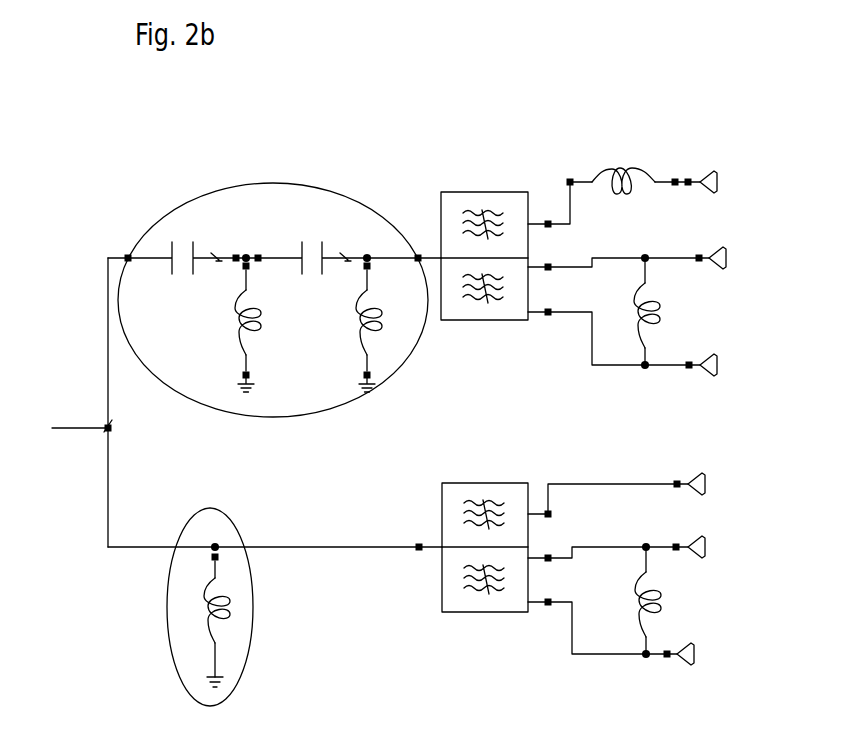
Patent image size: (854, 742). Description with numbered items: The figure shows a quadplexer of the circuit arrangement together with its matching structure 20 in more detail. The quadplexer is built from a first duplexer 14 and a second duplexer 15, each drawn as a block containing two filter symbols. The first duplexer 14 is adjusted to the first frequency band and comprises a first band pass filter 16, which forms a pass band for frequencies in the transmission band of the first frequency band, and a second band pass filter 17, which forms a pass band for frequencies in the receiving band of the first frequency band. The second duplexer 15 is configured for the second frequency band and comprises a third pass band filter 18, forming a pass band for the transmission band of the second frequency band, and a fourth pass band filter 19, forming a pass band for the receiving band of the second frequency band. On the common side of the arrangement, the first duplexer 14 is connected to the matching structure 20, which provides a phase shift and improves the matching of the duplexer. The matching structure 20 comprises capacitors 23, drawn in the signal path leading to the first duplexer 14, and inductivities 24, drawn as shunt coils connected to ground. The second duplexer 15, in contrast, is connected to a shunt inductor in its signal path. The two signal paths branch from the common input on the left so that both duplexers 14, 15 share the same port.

The first duplexer 14 is at (430, 191).
The second duplexer 15 is at (436, 528).
The first band pass filter 16 is at (712, 182).
The second band pass filter 17 is at (713, 365).
The third pass band filter 18 is at (700, 484).
The fourth pass band filter 19 is at (683, 657).
The matching structure 20 is at (145, 368).
The capacitors 23 is at (170, 243).
The inductivities 24 is at (216, 615).